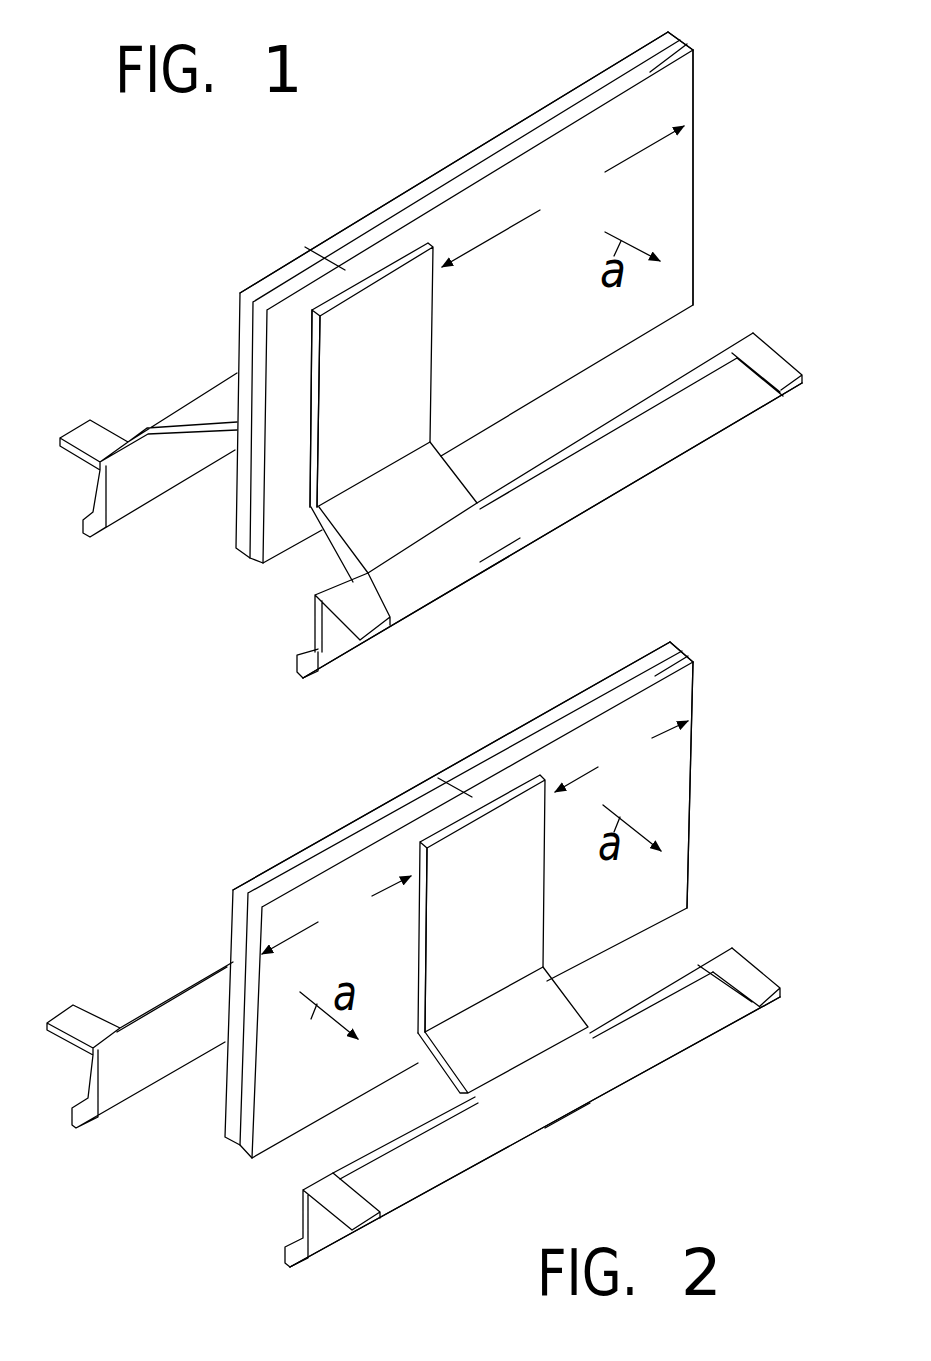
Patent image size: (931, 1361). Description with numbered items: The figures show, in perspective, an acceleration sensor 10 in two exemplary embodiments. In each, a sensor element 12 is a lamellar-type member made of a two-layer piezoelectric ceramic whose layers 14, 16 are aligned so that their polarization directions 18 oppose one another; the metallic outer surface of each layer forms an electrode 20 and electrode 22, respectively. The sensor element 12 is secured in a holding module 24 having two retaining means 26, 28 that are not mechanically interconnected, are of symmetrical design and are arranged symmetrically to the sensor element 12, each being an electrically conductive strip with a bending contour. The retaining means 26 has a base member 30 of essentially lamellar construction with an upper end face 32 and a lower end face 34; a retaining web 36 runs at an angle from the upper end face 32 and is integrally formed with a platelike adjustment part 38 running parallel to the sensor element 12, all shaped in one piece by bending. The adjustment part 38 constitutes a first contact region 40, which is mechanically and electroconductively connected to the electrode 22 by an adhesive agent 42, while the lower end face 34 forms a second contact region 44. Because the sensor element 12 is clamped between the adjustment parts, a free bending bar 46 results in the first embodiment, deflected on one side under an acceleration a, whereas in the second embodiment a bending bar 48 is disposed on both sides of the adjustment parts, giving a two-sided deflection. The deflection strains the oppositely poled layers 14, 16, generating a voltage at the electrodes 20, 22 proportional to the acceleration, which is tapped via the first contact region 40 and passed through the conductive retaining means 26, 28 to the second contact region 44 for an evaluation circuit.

In FIG. 1, the acceleration sensor 10 is at (215, 238).
In FIG. 2, the acceleration sensor 10 is at (193, 931).
In FIG. 1, the sensor element 12 is at (507, 120).
In FIG. 2, the sensor element 12 is at (533, 738).
In FIG. 1, the layer 14 is at (592, 87).
In FIG. 2, the layer 14 is at (633, 685).
In FIG. 1, the layer 16 is at (668, 32).
In FIG. 2, the layer 16 is at (670, 642).
In FIG. 1, the polarization direction 18 is at (339, 266).
In FIG. 2, the polarization direction 18 is at (467, 794).
In FIG. 1, the electrode 20 is at (448, 120).
In FIG. 2, the electrode 20 is at (260, 866).
In FIG. 1, the electrode 22 is at (672, 173).
In FIG. 2, the electrode 22 is at (670, 785).
In FIG. 1, the holding module 24 is at (342, 475).
In FIG. 2, the holding module 24 is at (383, 1031).
In FIG. 1, the retaining means 26 is at (453, 573).
In FIG. 2, the retaining means 26 is at (480, 1140).
In FIG. 1, the retaining means 28 is at (135, 485).
In FIG. 2, the retaining means 28 is at (120, 1082).
In FIG. 1, the base member 30 is at (549, 505).
In FIG. 2, the base member 30 is at (532, 1107).
In FIG. 1, the upper end face 32 is at (668, 387).
In FIG. 2, the upper end face 32 is at (690, 972).
In FIG. 1, the lower end face 34 is at (560, 537).
In FIG. 2, the lower end face 34 is at (612, 1097).
In FIG. 1, the retaining web 36 is at (380, 525).
In FIG. 2, the retaining web 36 is at (480, 1047).
In FIG. 1, the adjustment part 38 is at (328, 458).
In FIG. 2, the adjustment part 38 is at (440, 993).
In FIG. 1, the first contact region 40 is at (300, 437).
In FIG. 2, the first contact region 40 is at (411, 975).
In FIG. 1, the adhesive agent 42 is at (310, 337).
In FIG. 1, the second contact region 44 is at (506, 564).
In FIG. 2, the second contact region 44 is at (569, 1120).
In FIG. 1, the bending bar 46 is at (563, 196).
In FIG. 2, the bending bar 48 is at (475, 837).